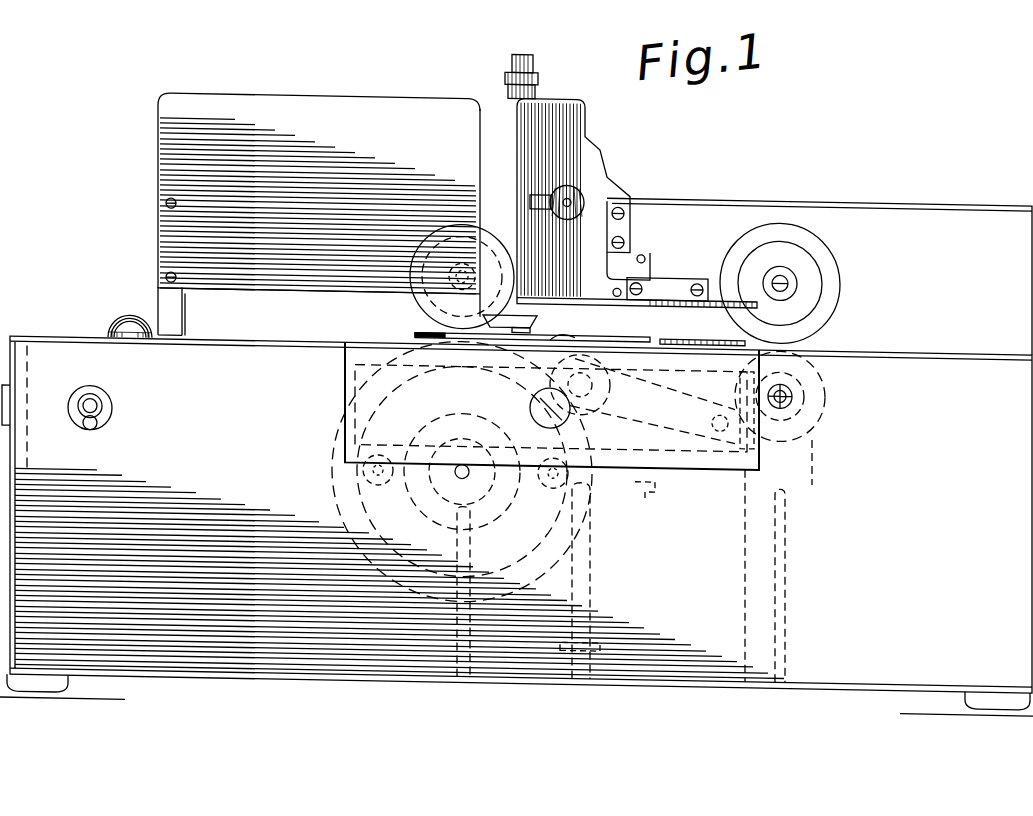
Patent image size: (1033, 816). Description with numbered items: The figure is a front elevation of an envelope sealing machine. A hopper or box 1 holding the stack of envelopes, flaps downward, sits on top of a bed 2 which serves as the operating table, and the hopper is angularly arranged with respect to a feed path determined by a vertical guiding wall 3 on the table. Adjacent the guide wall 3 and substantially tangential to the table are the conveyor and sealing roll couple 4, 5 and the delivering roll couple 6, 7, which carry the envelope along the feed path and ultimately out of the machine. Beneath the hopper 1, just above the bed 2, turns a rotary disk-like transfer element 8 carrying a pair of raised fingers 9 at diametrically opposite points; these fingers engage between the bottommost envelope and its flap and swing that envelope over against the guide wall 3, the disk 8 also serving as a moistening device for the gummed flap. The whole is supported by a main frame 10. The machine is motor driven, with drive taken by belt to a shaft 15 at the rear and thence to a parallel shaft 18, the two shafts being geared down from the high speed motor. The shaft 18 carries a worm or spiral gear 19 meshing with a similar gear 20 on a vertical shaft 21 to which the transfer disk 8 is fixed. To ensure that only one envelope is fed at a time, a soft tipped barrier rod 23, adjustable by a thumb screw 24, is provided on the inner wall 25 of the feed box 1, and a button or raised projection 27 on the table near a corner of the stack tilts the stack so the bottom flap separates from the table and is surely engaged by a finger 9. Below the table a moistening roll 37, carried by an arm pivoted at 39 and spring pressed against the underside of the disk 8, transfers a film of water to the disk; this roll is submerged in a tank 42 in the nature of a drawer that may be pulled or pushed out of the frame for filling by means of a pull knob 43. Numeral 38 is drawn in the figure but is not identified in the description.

The hopper or box 1 is at (420, 97).
The bed 2 is at (68, 338).
The vertical guiding wall 3 is at (893, 184).
The conveyor and sealing roll 4 is at (418, 298).
The conveyor and sealing roll 5 is at (345, 408).
The delivering roll 6 is at (833, 256).
The delivering roll 7 is at (840, 394).
The rotary disk-like element 8 is at (666, 332).
The raised noses or fingers 9 is at (618, 328).
The main frame 10 is at (668, 607).
The shaft 15 is at (786, 388).
The shaft 18 is at (447, 488).
The worm or spiral gear 19 is at (368, 505).
The gear 20 is at (640, 478).
The vertical shaft 21 is at (604, 594).
The soft tipped barrier rod 23 is at (555, 333).
The thumb screw 24 is at (540, 72).
The inner wall 25 is at (319, 193).
The button or raised projection 27 is at (128, 322).
The moistening roll 37 is at (622, 369).
The idler pulley 38 is at (692, 390).
The pivot 39 is at (708, 420).
The tank 42 is at (345, 380).
The pull knob 43 is at (530, 396).